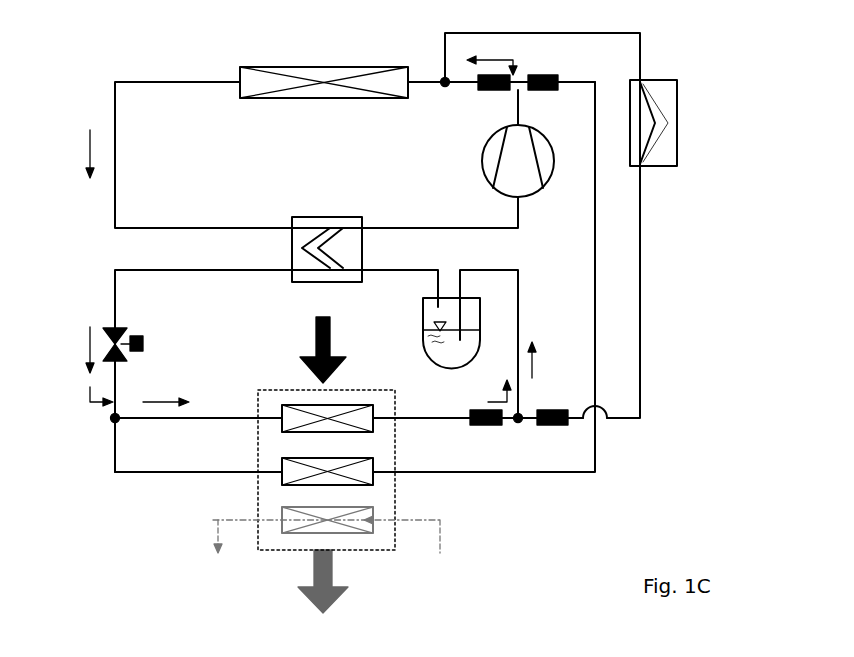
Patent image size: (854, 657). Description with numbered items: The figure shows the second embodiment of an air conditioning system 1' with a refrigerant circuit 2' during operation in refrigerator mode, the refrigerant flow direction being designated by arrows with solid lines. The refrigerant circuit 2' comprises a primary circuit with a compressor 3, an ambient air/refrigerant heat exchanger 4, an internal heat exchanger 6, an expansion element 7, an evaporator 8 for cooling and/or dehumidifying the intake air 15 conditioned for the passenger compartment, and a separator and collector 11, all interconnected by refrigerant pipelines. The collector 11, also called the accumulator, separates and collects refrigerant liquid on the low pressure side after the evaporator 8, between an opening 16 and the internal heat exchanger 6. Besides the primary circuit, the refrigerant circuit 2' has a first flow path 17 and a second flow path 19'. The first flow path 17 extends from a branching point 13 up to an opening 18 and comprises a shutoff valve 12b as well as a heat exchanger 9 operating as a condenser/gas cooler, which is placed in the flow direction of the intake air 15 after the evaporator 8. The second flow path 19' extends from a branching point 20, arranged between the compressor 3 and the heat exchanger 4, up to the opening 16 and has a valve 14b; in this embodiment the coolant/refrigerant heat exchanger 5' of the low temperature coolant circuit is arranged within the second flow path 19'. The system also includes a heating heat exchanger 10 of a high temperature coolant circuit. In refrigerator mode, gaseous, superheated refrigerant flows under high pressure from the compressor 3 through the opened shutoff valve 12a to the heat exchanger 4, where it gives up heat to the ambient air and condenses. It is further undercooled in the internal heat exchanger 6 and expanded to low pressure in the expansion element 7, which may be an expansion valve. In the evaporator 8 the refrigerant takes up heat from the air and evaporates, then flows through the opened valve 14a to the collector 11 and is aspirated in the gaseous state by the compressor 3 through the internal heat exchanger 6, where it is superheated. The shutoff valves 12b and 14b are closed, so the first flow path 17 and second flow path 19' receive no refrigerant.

The air conditioning system 1' is at (767, 74).
The refrigerant circuit 2' is at (699, 353).
The compressor 3 is at (492, 174).
The ambient air/refrigerant heat exchanger 4 is at (240, 68).
The coolant/refrigerant heat exchanger 5' is at (668, 155).
The internal heat exchanger 6 is at (330, 216).
The expansion element 7 is at (112, 330).
The evaporator 8 is at (278, 416).
The heat exchanger operating as condenser/gas cooler 9 is at (270, 470).
The heating heat exchanger 10 is at (362, 521).
The separator and collector 11 is at (427, 346).
The shutoff valve 12a is at (481, 94).
The shutoff valve 12b is at (556, 73).
The branching point 13 is at (515, 86).
The valve 14a is at (478, 427).
The valve 14b is at (556, 427).
The intake air 15 is at (312, 334).
The opening 16 is at (520, 424).
The first flow path 17 is at (598, 440).
The opening 18 is at (113, 420).
The second flow path 19' is at (674, 292).
The branching point 20 is at (443, 80).